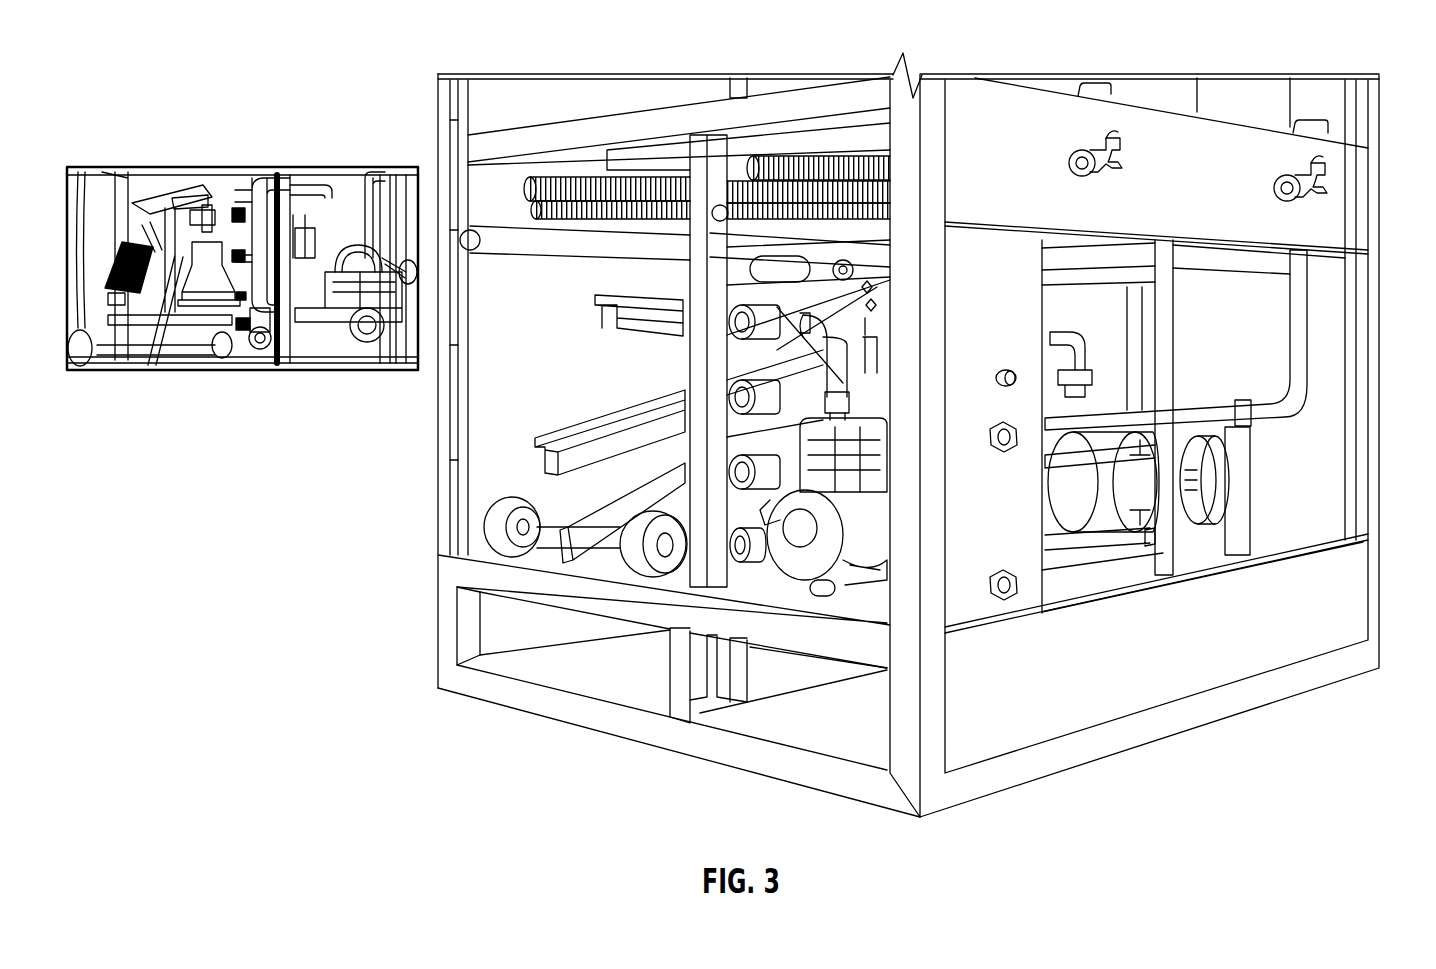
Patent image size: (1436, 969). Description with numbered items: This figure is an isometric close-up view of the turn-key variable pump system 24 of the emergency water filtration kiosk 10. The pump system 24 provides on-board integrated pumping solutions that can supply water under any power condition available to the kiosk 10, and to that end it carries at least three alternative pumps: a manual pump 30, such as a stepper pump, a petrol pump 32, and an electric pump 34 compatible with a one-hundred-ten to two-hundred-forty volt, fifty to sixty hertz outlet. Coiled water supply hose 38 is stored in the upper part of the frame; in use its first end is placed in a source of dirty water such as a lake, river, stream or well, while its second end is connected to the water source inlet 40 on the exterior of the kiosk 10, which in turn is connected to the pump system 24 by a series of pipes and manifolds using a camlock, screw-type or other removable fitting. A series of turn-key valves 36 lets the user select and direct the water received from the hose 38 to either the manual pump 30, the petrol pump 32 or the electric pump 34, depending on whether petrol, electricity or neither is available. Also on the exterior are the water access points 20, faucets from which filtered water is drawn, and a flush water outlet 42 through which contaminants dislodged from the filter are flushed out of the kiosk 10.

The emergency water filtration kiosk 10 is at (1338, 40).
The water access points 20 is at (1115, 165).
The turn-key variable pump system 24 is at (432, 437).
The manual pump 30 is at (627, 505).
The petrol pump 32 is at (803, 523).
The electric pump 34 is at (1130, 520).
The turn-key valves 36 is at (233, 250).
The water supply hose 38 is at (770, 152).
The water source inlet 40 is at (1007, 600).
The flush water outlet 42 is at (1002, 460).